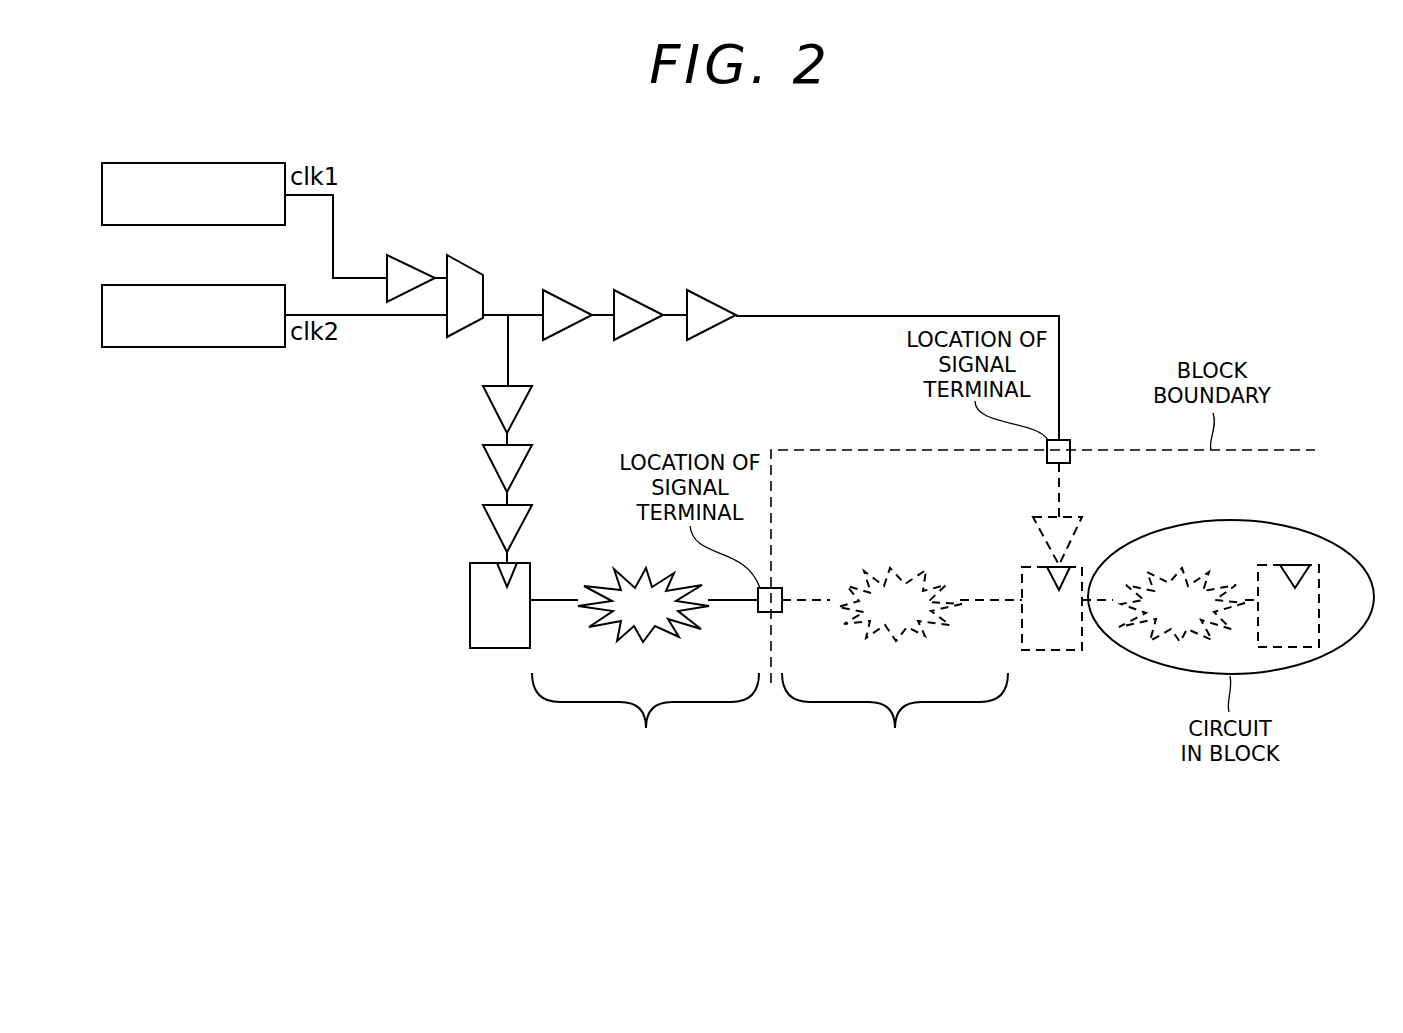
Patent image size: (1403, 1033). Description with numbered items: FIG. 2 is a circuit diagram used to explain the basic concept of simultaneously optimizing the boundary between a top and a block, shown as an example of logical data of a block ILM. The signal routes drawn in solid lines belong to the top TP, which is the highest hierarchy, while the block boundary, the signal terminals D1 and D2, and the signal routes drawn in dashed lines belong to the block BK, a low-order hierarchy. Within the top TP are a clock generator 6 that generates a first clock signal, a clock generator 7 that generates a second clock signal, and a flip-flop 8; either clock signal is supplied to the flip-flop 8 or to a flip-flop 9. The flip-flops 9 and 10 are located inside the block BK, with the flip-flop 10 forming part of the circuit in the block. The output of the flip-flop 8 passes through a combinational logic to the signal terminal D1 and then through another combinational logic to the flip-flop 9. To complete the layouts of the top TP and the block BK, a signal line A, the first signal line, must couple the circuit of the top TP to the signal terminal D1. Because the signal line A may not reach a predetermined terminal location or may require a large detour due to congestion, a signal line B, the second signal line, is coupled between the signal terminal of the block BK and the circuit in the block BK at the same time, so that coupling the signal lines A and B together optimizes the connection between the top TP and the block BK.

The clock generator 6 is at (193, 163).
The clock generator 7 is at (197, 347).
The flip-flop 8 is at (470, 605).
The flip-flop 9 is at (1050, 652).
The flip-flop 10 is at (1278, 565).
The signal terminal D1 is at (772, 612).
The signal terminal D2 is at (1067, 440).
The block BK is at (818, 450).
The top TP is at (1024, 271).
The signal line A is at (645, 717).
The signal line B is at (895, 717).